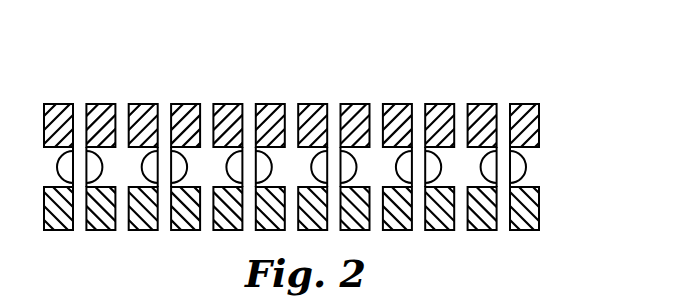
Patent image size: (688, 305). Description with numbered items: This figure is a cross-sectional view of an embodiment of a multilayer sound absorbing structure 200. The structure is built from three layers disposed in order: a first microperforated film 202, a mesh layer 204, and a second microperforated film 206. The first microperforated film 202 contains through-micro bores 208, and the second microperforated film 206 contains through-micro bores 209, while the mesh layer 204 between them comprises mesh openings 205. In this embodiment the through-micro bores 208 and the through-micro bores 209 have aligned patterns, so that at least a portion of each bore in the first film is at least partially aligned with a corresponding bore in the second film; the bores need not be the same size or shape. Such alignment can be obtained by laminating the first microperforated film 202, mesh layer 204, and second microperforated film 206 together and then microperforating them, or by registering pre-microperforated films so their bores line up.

The multilayer sound absorbing structure 200 is at (312, 150).
The first microperforated film 202 is at (541, 124).
The mesh layer 204 is at (526, 163).
The mesh openings 205 is at (377, 157).
The second microperforated film 206 is at (522, 232).
The through-micro bores 208 is at (459, 113).
The through-micro bores 209 is at (460, 223).